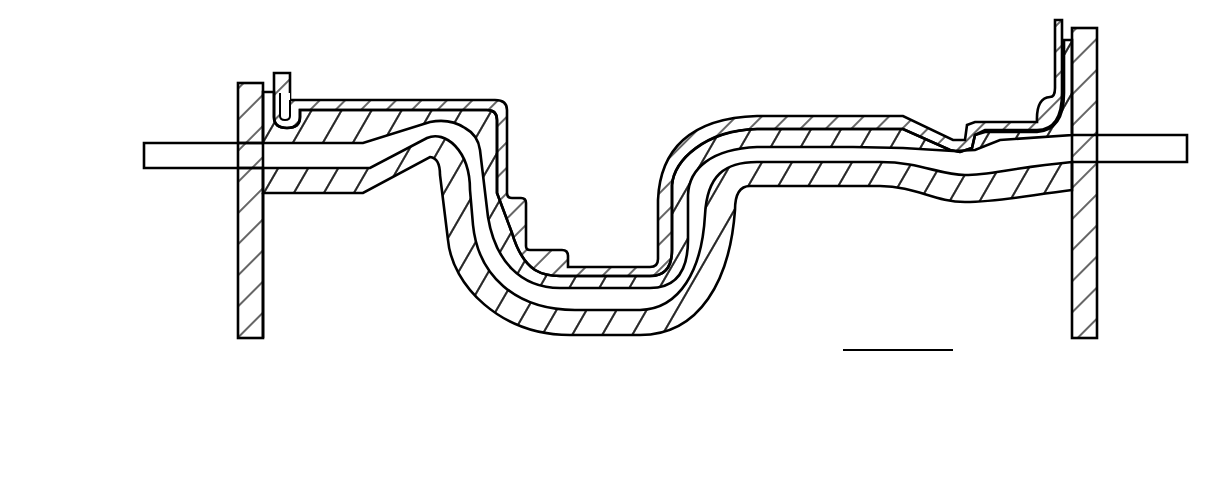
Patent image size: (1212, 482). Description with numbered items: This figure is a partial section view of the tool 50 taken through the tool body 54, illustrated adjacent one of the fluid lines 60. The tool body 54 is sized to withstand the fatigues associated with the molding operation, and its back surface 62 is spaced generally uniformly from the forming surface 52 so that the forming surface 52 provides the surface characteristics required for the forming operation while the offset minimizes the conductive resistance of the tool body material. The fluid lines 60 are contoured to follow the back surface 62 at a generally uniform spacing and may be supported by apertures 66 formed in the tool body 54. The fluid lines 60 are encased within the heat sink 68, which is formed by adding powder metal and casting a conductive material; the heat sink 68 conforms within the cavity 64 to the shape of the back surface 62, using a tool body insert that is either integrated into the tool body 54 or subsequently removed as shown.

The tool 50 is at (142, 66).
The forming surface 52 is at (507, 140).
The tool body 54 is at (238, 237).
The fluid lines 60 is at (213, 143).
The back surface 62 is at (583, 288).
The cavity 64 is at (263, 320).
The apertures 66 is at (250, 162).
The heat sink 68 is at (704, 307).